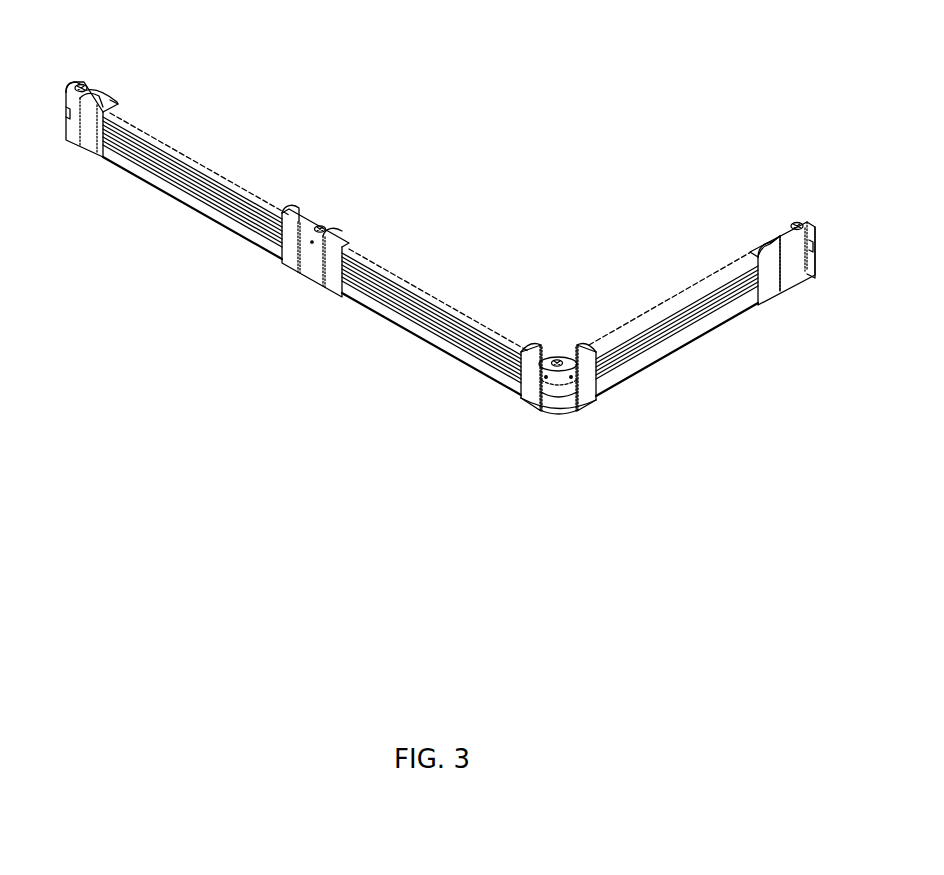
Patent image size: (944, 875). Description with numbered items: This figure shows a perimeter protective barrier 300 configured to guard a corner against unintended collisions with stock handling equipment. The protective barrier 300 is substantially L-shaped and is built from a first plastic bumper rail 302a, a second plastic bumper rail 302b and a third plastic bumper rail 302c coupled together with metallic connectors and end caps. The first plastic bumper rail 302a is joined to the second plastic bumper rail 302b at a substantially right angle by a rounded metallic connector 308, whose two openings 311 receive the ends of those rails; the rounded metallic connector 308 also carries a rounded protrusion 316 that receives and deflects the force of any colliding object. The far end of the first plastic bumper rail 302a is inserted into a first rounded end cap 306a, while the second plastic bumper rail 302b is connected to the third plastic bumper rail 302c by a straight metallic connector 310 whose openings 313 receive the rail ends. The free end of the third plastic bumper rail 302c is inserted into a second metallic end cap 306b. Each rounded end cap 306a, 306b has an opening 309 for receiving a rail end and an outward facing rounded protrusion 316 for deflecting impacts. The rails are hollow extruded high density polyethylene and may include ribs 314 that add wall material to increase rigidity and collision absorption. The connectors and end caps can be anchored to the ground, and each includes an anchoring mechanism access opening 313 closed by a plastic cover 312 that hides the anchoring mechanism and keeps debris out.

The protective barrier 300 is at (446, 514).
The first plastic bumper rail 302a is at (670, 296).
The second plastic bumper rail 302b is at (500, 324).
The third plastic bumper rail 302c is at (226, 176).
The first rounded end cap 306a is at (792, 282).
The second metallic end cap 306b is at (78, 150).
The rounded metallic connector 308 is at (557, 414).
The opening 309 is at (120, 103).
The straight metallic connector 310 is at (306, 263).
The openings 311 is at (522, 392).
The plastic cover 312 is at (87, 86).
The anchoring mechanism access opening 313 is at (283, 214).
The ribs 314 is at (412, 318).
The rounded protrusion 316 is at (68, 88).